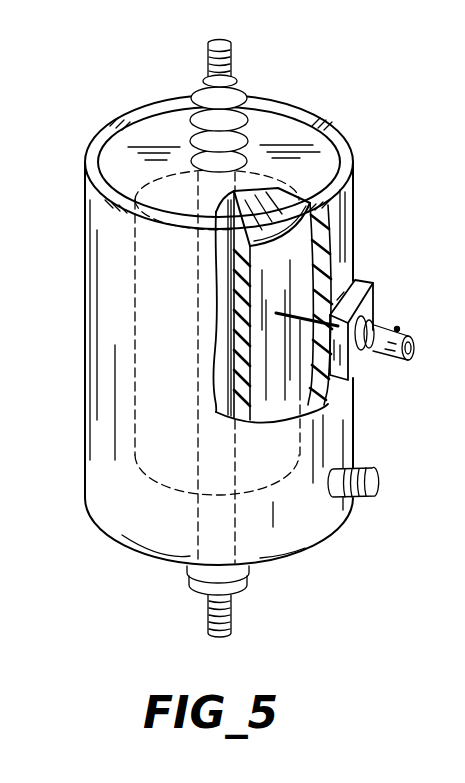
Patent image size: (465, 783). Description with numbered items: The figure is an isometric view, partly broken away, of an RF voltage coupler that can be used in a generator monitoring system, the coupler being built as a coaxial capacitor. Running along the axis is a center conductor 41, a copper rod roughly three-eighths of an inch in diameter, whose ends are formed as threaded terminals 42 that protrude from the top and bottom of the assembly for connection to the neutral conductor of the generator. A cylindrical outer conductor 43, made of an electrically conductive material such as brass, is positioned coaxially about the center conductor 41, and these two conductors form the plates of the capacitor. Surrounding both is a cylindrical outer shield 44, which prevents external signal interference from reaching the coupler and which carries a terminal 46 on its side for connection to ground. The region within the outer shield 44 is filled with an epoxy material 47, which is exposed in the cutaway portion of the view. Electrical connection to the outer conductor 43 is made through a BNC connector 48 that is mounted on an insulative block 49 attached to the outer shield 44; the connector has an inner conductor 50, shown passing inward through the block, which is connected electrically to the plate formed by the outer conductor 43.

The center conductor 41 is at (222, 334).
The threaded terminals 42 is at (230, 64).
The cylindrical outer conductor 43 is at (267, 389).
The cylindrical outer shield 44 is at (137, 108).
The terminal 46 is at (363, 500).
The epoxy material 47 is at (253, 233).
The BNC connector 48 is at (378, 356).
The insulative block 49 is at (362, 280).
The inner conductor 50 is at (277, 312).